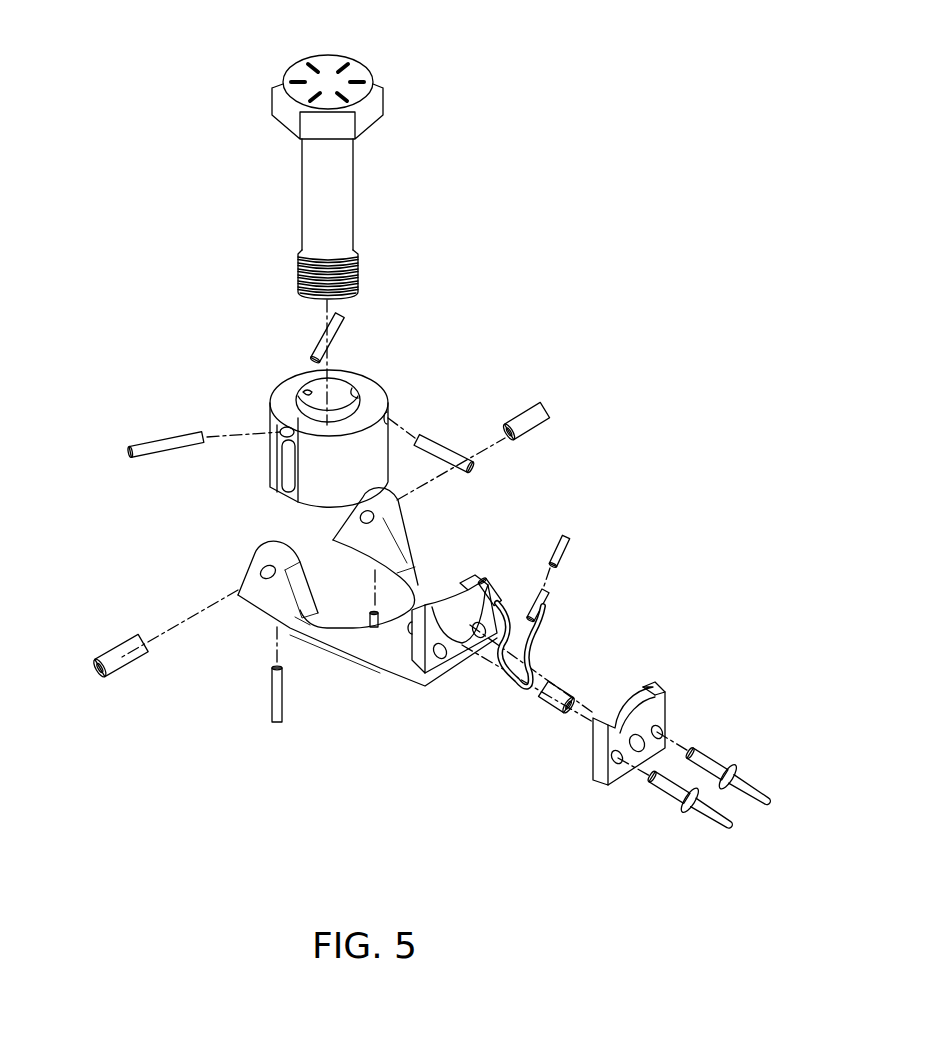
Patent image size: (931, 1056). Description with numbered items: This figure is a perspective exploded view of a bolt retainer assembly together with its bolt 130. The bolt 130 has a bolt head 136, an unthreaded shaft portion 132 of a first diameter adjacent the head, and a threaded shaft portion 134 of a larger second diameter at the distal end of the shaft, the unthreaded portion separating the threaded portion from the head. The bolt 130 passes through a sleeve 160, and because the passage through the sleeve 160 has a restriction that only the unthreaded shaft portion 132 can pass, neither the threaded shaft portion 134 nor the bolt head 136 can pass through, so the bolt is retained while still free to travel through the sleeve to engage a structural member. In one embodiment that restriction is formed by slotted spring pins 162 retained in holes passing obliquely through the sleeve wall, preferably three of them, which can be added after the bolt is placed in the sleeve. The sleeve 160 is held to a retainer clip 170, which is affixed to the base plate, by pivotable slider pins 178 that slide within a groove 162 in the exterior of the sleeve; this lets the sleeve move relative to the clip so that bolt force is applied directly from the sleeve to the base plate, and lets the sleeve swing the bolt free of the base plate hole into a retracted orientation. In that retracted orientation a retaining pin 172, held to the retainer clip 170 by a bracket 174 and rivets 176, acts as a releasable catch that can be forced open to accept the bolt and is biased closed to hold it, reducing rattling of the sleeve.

The bolt 130 is at (326, 156).
The unthreaded shaft portion 132 is at (285, 183).
The threaded shaft portion 134 is at (278, 277).
The bolt head 136 is at (270, 97).
The sleeve 160 is at (268, 490).
The groove / slotted spring pins 162 is at (422, 432).
The retainer clip 170 is at (352, 677).
The retaining pin 172 is at (522, 700).
The bracket 174 is at (597, 783).
The rivets 176 is at (713, 765).
The slider pins 178 is at (115, 680).